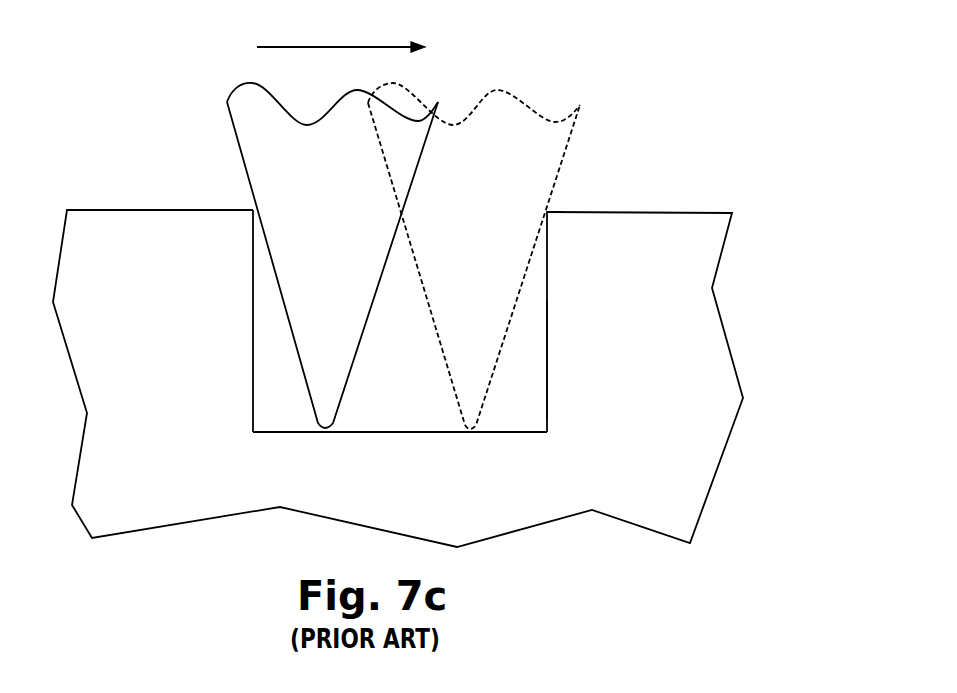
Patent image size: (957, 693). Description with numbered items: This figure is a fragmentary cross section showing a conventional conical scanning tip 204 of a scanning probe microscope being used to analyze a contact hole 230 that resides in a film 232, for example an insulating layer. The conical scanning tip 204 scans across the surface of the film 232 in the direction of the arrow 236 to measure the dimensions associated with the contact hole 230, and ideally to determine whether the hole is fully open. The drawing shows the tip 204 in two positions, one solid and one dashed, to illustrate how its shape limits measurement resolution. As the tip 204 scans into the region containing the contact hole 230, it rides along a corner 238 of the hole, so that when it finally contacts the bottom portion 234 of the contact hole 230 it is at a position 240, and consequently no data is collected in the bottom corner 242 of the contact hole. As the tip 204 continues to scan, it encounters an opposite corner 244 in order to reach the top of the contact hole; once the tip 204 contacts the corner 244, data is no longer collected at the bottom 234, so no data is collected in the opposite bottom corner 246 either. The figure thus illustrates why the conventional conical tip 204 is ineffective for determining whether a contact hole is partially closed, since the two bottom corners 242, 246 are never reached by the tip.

The conical scanning tip 204 is at (237, 88).
The contact hole 230 is at (609, 110).
The film 232 is at (717, 303).
The bottom portion 234 is at (462, 475).
The arrow 236 is at (323, 43).
The corner 238 is at (236, 230).
The position 240 is at (311, 472).
The bottom corner 242 is at (228, 396).
The opposite corner 244 is at (578, 202).
The opposite bottom corner 246 is at (603, 402).